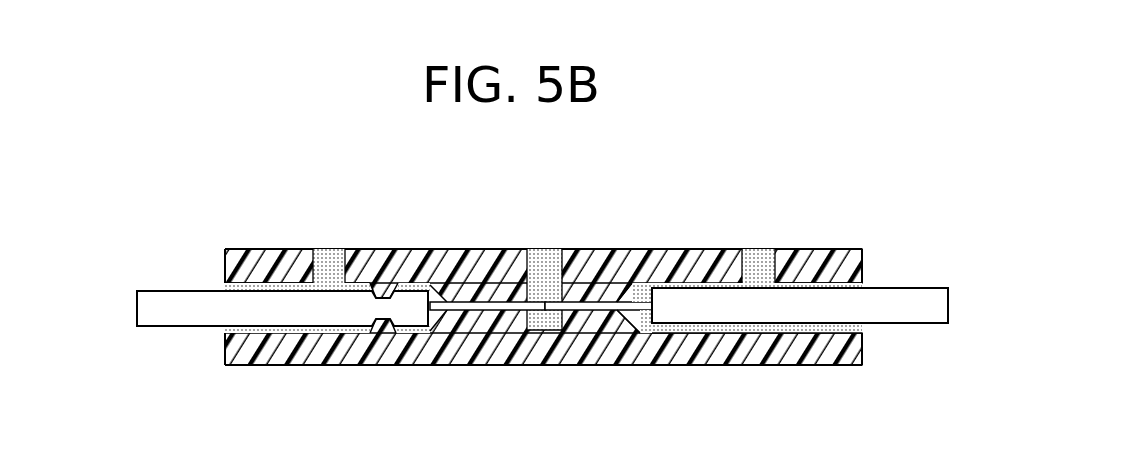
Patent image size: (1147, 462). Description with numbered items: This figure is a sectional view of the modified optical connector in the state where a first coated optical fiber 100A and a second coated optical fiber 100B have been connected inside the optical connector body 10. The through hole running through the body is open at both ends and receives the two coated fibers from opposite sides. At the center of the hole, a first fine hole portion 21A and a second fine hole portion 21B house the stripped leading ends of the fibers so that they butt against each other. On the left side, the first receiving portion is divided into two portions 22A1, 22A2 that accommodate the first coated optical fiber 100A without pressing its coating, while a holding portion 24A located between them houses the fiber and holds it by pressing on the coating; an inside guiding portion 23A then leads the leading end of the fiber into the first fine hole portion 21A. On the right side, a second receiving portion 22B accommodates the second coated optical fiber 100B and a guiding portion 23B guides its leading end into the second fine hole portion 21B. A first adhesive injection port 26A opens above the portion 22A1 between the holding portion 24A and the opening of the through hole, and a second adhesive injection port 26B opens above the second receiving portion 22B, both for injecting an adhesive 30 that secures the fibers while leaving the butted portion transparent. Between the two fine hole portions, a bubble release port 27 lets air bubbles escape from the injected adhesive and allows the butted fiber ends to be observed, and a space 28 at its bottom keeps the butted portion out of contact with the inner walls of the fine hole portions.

The optical connector body 10 is at (636, 232).
The first portion of the first receiving portion 22A1 is at (252, 249).
The first adhesive injection port 26A is at (320, 249).
The second portion of the first receiving portion 22A2 is at (405, 249).
The bubble release port 27 is at (540, 249).
The second adhesive injection port 26B is at (748, 249).
The adhesive 30 is at (770, 249).
The first coated optical fiber 100A is at (172, 312).
The holding portion 24A is at (378, 330).
The inside guiding portion 23A is at (430, 330).
The first fine hole portion 21A is at (498, 312).
The space 28 is at (552, 330).
The second fine hole portion 21B is at (604, 320).
The guiding portion 23B is at (638, 330).
The second receiving portion 22B is at (792, 335).
The second coated optical fiber 100B is at (907, 310).